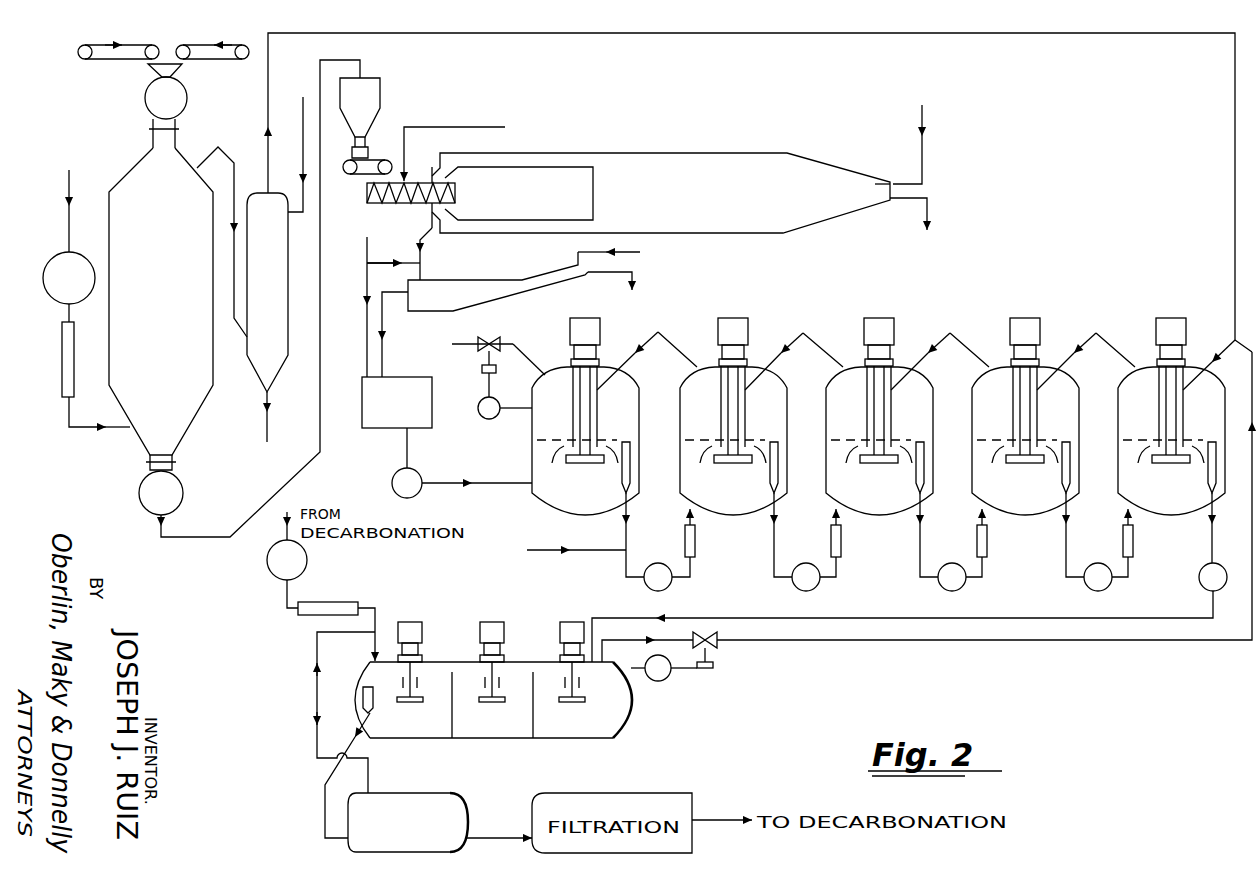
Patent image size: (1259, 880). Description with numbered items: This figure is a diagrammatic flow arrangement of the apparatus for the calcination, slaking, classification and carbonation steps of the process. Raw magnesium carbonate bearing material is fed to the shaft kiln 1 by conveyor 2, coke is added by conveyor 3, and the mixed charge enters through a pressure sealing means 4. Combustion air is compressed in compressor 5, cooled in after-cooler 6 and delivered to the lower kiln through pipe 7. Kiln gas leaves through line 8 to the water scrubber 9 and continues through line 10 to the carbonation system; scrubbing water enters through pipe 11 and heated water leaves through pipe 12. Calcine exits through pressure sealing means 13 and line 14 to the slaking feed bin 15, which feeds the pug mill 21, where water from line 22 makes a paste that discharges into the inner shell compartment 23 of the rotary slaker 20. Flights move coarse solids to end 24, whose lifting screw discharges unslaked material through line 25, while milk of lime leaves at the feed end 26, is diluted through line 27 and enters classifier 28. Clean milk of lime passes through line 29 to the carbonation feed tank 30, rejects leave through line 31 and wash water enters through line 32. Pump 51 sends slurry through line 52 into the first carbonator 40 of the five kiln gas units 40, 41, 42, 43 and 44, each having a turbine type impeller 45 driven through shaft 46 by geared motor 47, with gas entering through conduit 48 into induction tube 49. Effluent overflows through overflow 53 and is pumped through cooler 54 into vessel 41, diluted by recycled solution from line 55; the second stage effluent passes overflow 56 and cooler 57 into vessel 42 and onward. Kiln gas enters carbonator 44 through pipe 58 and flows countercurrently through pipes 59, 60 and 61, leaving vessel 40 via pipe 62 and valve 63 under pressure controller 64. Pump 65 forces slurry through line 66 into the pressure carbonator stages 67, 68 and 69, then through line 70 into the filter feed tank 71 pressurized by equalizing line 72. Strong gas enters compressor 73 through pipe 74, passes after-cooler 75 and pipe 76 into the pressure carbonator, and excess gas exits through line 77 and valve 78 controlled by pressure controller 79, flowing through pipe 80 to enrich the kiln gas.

The shaft kiln 1 is at (161, 309).
The conveyor 2 is at (230, 46).
The conveyor 3 is at (90, 45).
The pressure sealing means 4 is at (166, 106).
The compressor 5 is at (69, 237).
The after-cooler 6 is at (62, 360).
The pipe 7 is at (84, 428).
The line 8 is at (199, 166).
The water scrubber 9 is at (267, 292).
The line 10 is at (270, 72).
The pipe 11 is at (301, 107).
The pipe 12 is at (270, 404).
The pressure sealing means 13 is at (161, 493).
The line 14 is at (293, 480).
The slaking feed bin 15 is at (366, 105).
The double shell type rotary slaker 20 is at (665, 153).
The pre-slaker or pug mill 21 is at (418, 182).
The line 22 is at (926, 115).
The inner shell compartment 23 is at (519, 193).
The end 24 is at (858, 189).
The line 25 is at (932, 203).
The feed end 26 is at (420, 232).
The line 27 is at (369, 263).
The classifier 28 is at (498, 281).
The line 29 is at (386, 350).
The carbonation feed tank 30 is at (397, 402).
The line 31 is at (640, 272).
The line 32 is at (642, 252).
The carbonator 40 is at (585, 441).
The vessel 41 is at (733, 441).
The vessel 42 is at (879, 441).
The vessel 43 is at (1025, 441).
The carbonator 44 is at (1171, 441).
The turbine type impeller 45 is at (580, 464).
The shaft 46 is at (590, 405).
The geared motor 47 is at (598, 320).
The conduit 48 is at (639, 348).
The induction tube 49 is at (573, 401).
The pump 51 is at (416, 472).
The line 52 is at (453, 483).
The overflow 53 is at (632, 472).
The cooler 54 is at (697, 541).
The line 55 is at (582, 550).
The overflow 56 is at (780, 530).
The cooler 57 is at (843, 541).
The pipe 58 is at (1222, 352).
The pipe 59 is at (1099, 333).
The pipe 60 is at (952, 333).
The pipe 61 is at (806, 333).
The pipe 62 is at (514, 344).
The valve 63 is at (486, 337).
The pressure controller 64 is at (478, 408).
The pump 65 is at (1200, 583).
The line 66 is at (1010, 618).
The first stage 67 is at (572, 676).
The stage 68 is at (492, 676).
The stage 69 is at (410, 676).
The line 70 is at (326, 784).
The filter feed tank 71 is at (440, 822).
The equalizing line 72 is at (315, 688).
The compressor 73 is at (267, 562).
The pipe 74 is at (284, 537).
The after-cooler 75 is at (328, 602).
The pipe 76 is at (377, 612).
The line 77 is at (615, 640).
The valve 78 is at (720, 634).
The pressure controller 79 is at (668, 682).
The pipe 80 is at (884, 641).